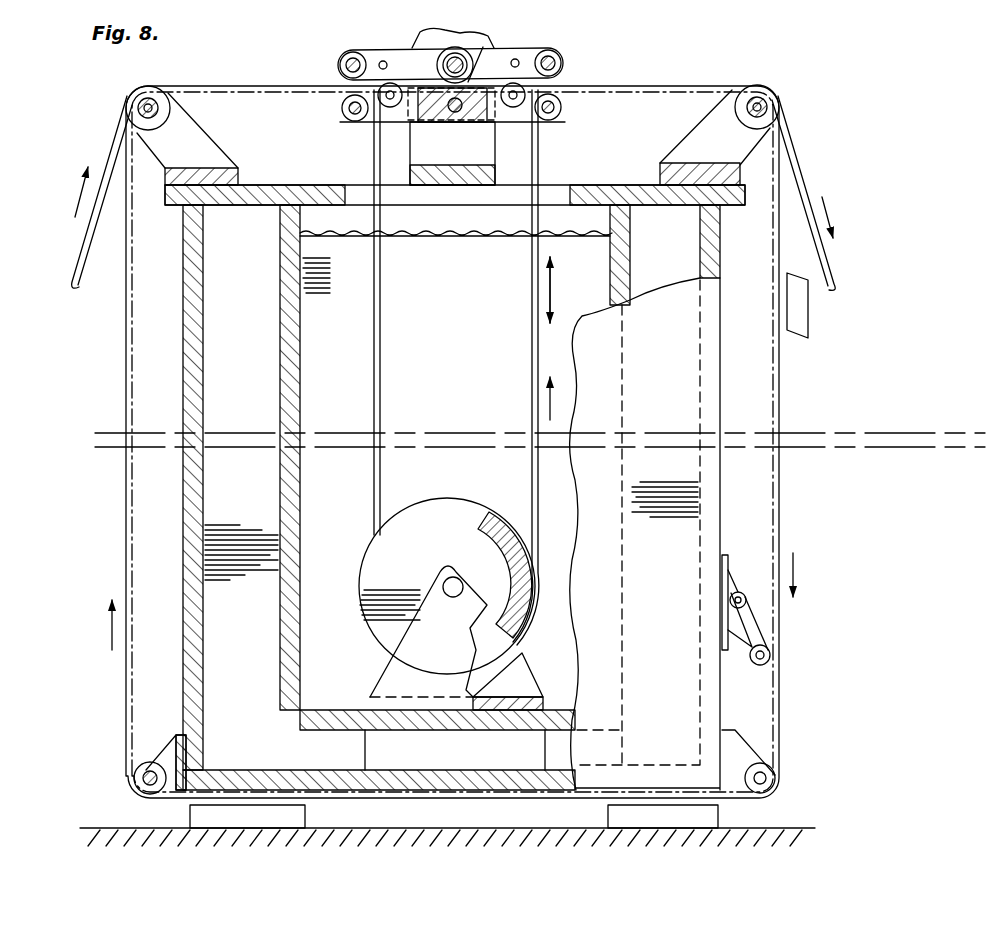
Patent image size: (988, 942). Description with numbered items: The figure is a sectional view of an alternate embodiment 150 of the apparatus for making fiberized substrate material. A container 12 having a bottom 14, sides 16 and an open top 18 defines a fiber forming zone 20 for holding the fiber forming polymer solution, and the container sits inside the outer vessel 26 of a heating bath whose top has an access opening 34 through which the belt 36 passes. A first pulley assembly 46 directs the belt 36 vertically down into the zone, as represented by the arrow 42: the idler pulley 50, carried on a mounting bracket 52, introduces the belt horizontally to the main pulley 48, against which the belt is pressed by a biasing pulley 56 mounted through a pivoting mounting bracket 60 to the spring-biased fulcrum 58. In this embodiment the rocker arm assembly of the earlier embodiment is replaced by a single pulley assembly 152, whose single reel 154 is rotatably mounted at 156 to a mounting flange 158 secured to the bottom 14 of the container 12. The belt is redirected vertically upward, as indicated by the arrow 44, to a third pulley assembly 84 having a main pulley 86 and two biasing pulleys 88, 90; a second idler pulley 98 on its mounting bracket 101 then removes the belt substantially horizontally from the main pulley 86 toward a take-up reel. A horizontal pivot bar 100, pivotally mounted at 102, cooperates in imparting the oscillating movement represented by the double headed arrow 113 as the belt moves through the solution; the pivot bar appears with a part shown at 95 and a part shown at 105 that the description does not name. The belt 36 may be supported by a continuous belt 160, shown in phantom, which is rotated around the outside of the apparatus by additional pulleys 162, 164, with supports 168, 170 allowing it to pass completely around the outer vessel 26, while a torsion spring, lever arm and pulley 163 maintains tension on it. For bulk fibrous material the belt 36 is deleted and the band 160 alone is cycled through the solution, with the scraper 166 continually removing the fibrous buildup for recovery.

The container 12 is at (280, 622).
The bottom 14 is at (497, 725).
The sides 16 is at (280, 387).
The open top 18 is at (312, 228).
The fiber forming zone 20 is at (362, 511).
The outer vessel 26 is at (722, 498).
The access opening 34 is at (562, 193).
The belt 36 is at (805, 177).
The arrow 42 is at (357, 393).
The arrow 44 is at (575, 405).
The first pulley assembly 46 is at (326, 62).
The main pulley 48 is at (340, 113).
The idler pulley 50 is at (136, 92).
The mounting bracket 52 is at (160, 150).
The biasing pulley 56 is at (400, 120).
The fulcrum 58 is at (398, 62).
The pivoting mounting bracket 60 is at (340, 50).
The third pulley assembly 84 is at (572, 47).
The main pulley 86 is at (566, 110).
The biasing pulley 88 is at (575, 66).
The biasing pulley 90 is at (527, 120).
The central pulley 95 is at (498, 60).
The second idler pulley 98 is at (783, 92).
The horizontal pivot bar 100 is at (527, 48).
The mounting bracket 101 is at (748, 165).
The pivotal mounting 102 is at (468, 115).
The cam lever 105 is at (452, 45).
The double headed arrow 113 is at (553, 283).
The alternate embodiment 150 is at (668, 45).
The single pulley assembly 152 is at (535, 495).
The single reel 154 is at (388, 627).
The rotatable mounting 156 is at (455, 577).
The mounting flange 158 is at (560, 677).
The continuous belt 160 is at (125, 567).
The additional pulley 162 is at (177, 800).
The torsion spring, lever arm and pulley 163 is at (757, 632).
The additional pulley 164 is at (773, 800).
The scraper 166 is at (803, 318).
The support 168 is at (280, 820).
The support 170 is at (665, 815).